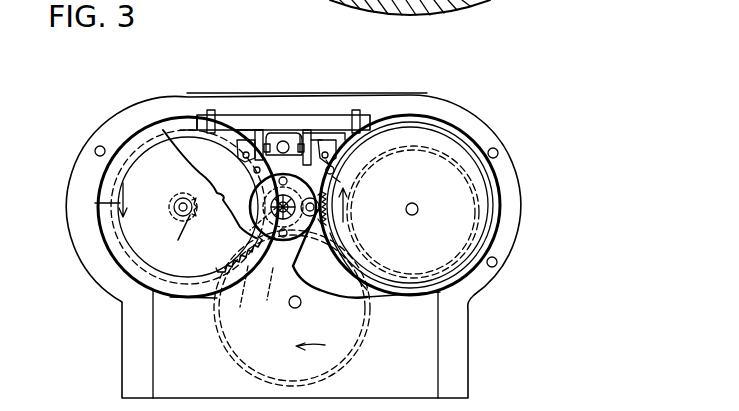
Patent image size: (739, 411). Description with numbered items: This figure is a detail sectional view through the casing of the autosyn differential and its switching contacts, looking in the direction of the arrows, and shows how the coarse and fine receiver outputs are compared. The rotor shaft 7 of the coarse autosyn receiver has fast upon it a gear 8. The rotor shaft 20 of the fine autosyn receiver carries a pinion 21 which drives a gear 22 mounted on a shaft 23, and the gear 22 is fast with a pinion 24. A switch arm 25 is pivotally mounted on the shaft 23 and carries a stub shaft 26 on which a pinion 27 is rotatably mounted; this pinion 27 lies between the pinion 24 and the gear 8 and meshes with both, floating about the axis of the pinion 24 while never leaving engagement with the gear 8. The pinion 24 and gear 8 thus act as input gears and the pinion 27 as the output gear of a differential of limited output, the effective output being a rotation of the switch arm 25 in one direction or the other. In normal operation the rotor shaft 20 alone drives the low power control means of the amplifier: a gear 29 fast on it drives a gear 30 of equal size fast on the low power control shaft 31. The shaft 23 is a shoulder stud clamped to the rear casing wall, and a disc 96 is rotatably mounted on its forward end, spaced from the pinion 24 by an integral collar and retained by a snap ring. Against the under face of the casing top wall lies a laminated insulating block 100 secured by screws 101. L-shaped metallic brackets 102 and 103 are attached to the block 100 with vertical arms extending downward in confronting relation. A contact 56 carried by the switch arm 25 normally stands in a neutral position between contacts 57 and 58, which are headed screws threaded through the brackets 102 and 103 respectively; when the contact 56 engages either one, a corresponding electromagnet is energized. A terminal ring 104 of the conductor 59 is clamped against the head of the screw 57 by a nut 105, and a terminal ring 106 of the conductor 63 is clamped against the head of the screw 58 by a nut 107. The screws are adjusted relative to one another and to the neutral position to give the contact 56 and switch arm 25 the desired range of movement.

The rotor shaft 7 is at (418, 206).
The gear 8 is at (455, 152).
The rotor shaft 20 is at (183, 198).
The pinion 21 is at (177, 234).
The gear 22 is at (210, 295).
The shaft 23 is at (250, 230).
The pinion 24 is at (266, 292).
The switch arm 25 is at (283, 140).
The stub shaft 26 is at (327, 193).
The pinion 27 is at (312, 240).
The gear 29 is at (78, 204).
The gear 30 is at (250, 350).
The low power control shaft 31 is at (303, 302).
The contact 56 is at (292, 143).
The contact 57 is at (270, 140).
The contact 58 is at (316, 133).
The conductor 59 is at (260, 180).
The conductor 63 is at (335, 170).
The disc 96 is at (297, 290).
The insulating block 100 is at (182, 115).
The screws 101 is at (163, 123).
The bracket 102 is at (200, 117).
The bracket 103 is at (322, 130).
The terminal ring 104 is at (238, 128).
The nut 105 is at (258, 130).
The terminal ring 106 is at (337, 128).
The nut 107 is at (333, 177).